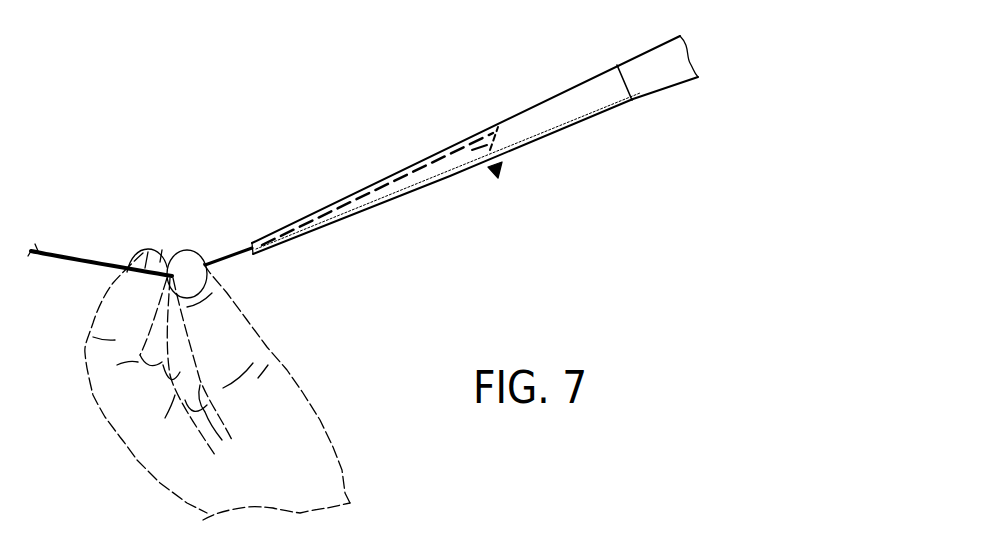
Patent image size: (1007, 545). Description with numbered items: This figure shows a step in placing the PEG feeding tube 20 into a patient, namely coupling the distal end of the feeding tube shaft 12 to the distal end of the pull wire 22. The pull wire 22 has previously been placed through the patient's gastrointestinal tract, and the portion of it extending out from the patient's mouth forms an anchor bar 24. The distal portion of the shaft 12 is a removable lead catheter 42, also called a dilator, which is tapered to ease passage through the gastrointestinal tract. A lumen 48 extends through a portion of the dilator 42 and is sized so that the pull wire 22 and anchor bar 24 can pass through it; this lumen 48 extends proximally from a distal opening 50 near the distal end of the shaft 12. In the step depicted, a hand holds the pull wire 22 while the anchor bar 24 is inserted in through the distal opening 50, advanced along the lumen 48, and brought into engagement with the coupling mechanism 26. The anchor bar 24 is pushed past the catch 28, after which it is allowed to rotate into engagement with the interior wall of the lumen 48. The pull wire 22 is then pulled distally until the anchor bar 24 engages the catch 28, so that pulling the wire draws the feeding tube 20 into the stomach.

The elongate tubular shaft 12 is at (662, 89).
The PEG feeding tube 20 is at (487, 145).
The pull wire 22 is at (60, 248).
The anchor bar 24 is at (492, 120).
The coupling mechanism 26 is at (497, 180).
The catch 28 is at (464, 180).
The lead catheter 42 is at (609, 109).
The lumen 48 is at (341, 203).
The distal opening 50 is at (249, 243).